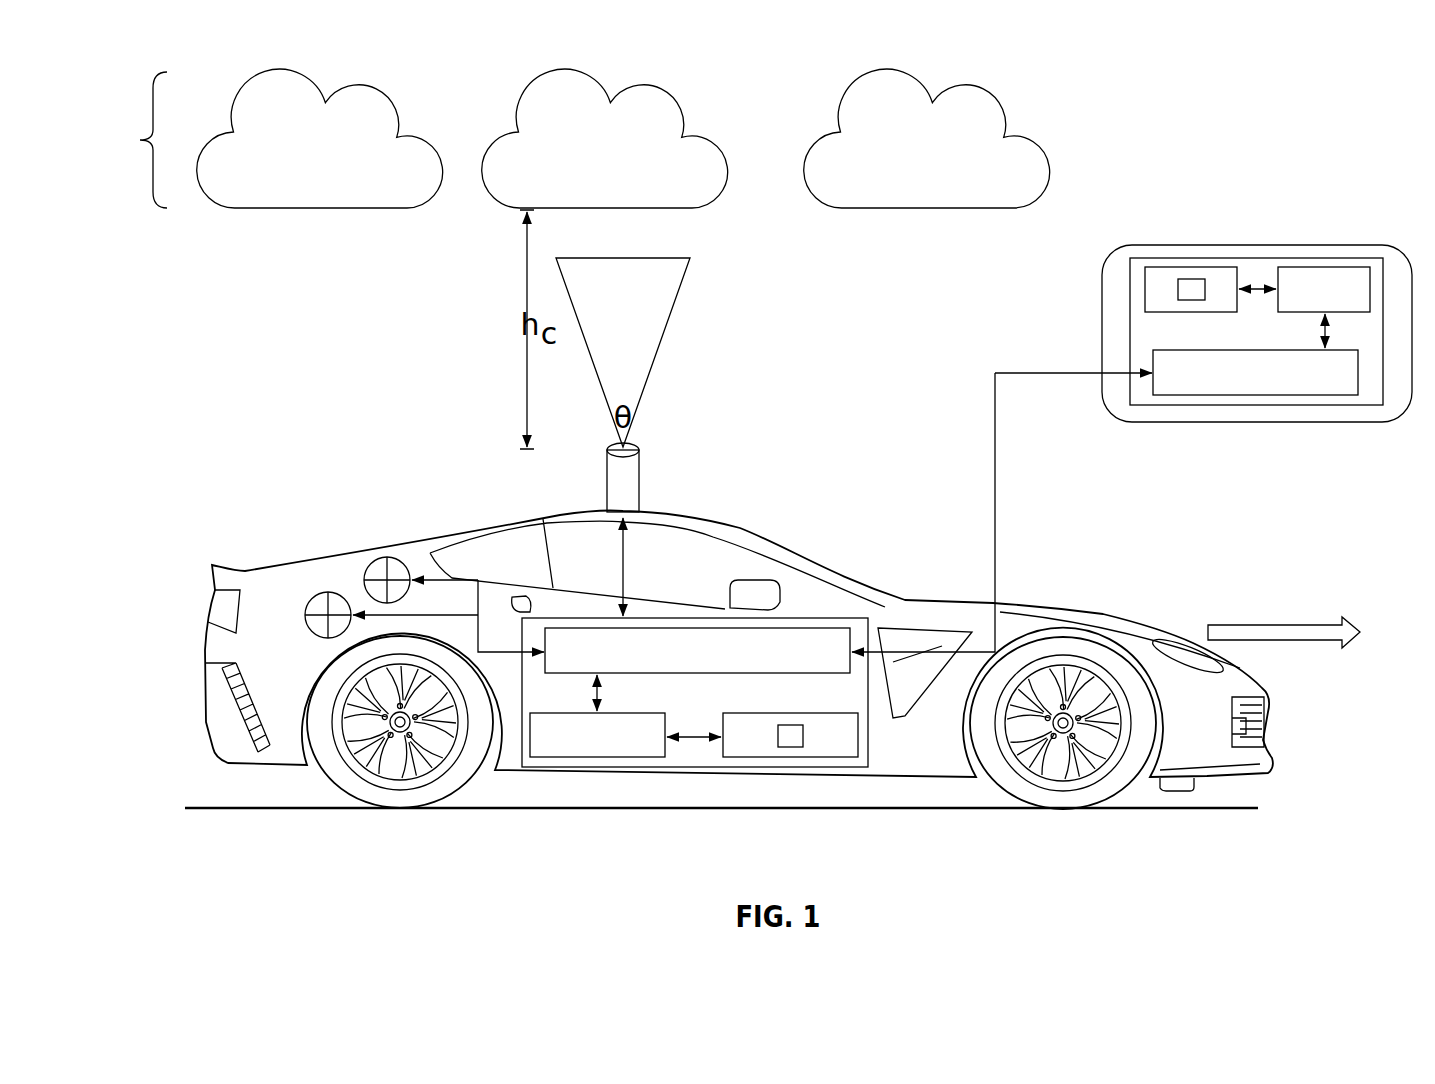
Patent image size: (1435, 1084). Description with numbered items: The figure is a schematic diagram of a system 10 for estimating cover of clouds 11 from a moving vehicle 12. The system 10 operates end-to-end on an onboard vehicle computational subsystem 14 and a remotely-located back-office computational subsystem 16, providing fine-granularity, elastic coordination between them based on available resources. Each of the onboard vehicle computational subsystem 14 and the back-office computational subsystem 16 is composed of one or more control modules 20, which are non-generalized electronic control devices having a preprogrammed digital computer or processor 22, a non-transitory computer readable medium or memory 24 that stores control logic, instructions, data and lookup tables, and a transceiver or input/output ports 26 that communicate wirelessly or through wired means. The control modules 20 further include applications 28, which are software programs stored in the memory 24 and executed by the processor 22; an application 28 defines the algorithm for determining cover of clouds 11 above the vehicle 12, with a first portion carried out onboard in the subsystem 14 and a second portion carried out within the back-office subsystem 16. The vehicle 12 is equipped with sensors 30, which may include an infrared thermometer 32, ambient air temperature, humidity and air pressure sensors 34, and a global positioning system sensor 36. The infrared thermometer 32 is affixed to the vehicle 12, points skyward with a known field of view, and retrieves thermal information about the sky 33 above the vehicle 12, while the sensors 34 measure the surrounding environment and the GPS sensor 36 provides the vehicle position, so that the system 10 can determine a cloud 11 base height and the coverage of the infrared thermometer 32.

The system 10 is at (1168, 174).
The cloud 11 is at (295, 164).
The moving vehicle 12 is at (1060, 603).
The onboard vehicle computational subsystem 14 is at (552, 784).
The back-office computational subsystem 16 is at (1398, 233).
The control module 20 is at (1310, 406).
The processor 22 is at (1325, 267).
The memory 24 is at (1158, 267).
The input/output (I/O) ports 26 is at (1230, 396).
The application 28 is at (1190, 279).
The sensors 30 is at (506, 538).
The infrared (IR) thermometer 32 is at (640, 476).
The sky 33 is at (135, 140).
The ambient air temperature, humidity, and air pressure sensors 34 is at (387, 556).
The global positioning system (GPS) sensor 36 is at (328, 592).